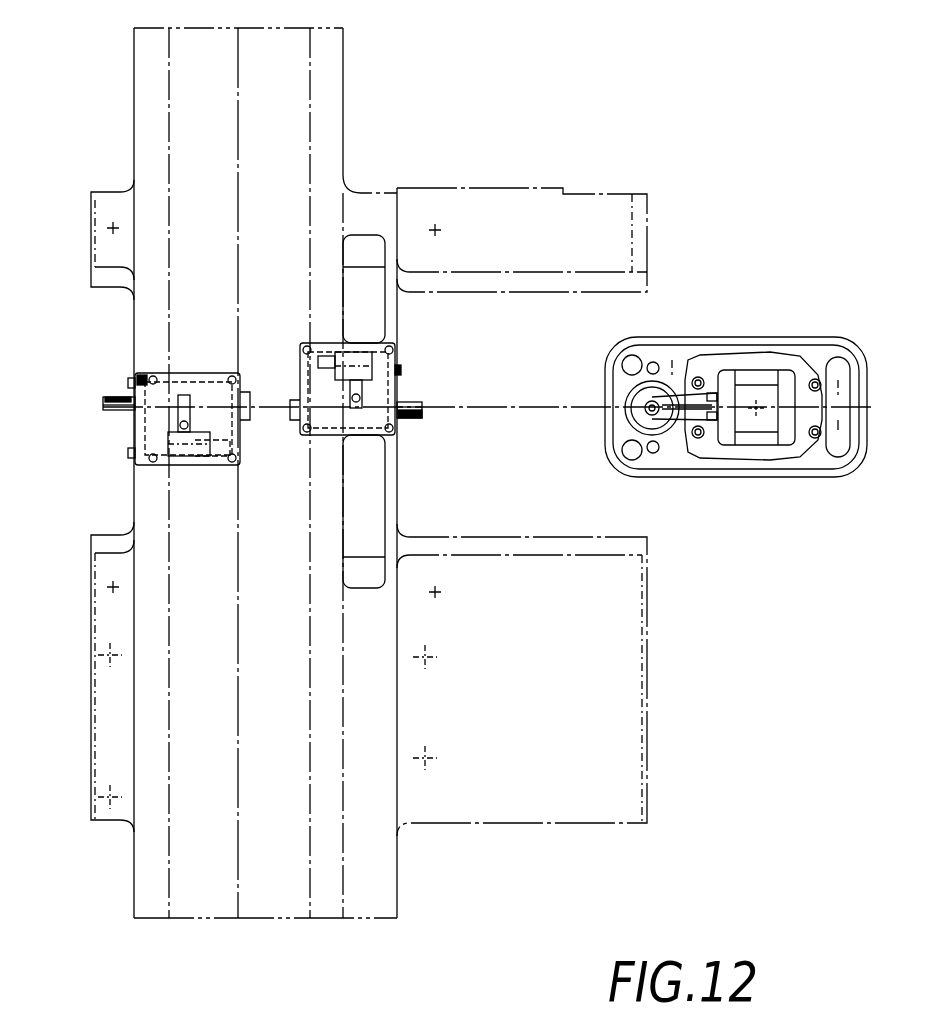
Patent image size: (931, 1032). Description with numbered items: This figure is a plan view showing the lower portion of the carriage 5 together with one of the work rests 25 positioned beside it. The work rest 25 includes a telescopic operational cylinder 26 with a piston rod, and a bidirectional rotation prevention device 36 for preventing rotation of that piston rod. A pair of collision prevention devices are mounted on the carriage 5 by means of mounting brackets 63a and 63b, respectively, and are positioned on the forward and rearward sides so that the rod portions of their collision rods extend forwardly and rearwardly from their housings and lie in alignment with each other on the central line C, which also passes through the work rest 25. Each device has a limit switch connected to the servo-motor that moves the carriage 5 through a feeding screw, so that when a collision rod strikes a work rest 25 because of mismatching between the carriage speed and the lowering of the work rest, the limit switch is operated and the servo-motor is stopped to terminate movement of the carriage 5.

The carriage 5 is at (348, 175).
The work rest 25 is at (752, 333).
The telescopic operational cylinder 26 is at (776, 455).
The bidirectional rotation prevention device 36 is at (672, 432).
The mounting bracket 63a is at (139, 375).
The mounting bracket 63b is at (399, 380).
The central line C is at (497, 406).